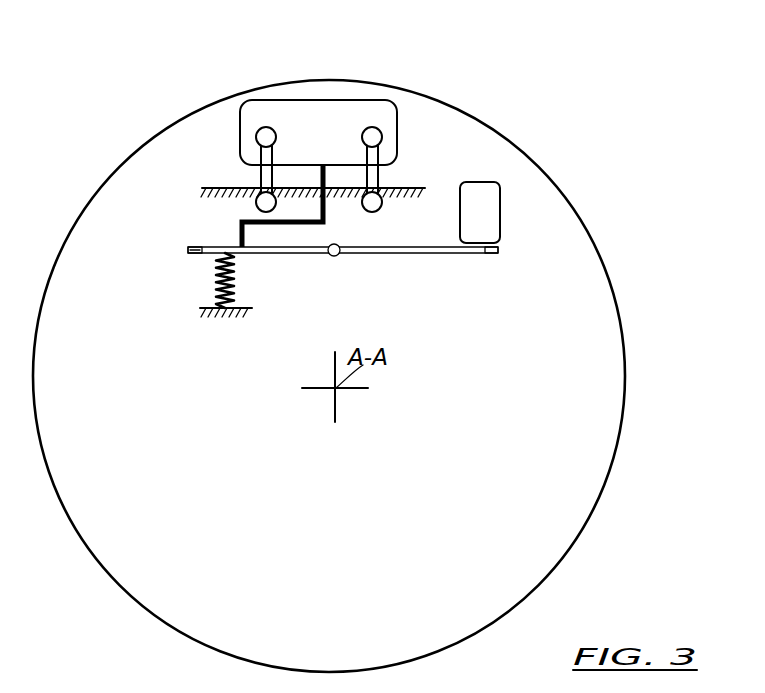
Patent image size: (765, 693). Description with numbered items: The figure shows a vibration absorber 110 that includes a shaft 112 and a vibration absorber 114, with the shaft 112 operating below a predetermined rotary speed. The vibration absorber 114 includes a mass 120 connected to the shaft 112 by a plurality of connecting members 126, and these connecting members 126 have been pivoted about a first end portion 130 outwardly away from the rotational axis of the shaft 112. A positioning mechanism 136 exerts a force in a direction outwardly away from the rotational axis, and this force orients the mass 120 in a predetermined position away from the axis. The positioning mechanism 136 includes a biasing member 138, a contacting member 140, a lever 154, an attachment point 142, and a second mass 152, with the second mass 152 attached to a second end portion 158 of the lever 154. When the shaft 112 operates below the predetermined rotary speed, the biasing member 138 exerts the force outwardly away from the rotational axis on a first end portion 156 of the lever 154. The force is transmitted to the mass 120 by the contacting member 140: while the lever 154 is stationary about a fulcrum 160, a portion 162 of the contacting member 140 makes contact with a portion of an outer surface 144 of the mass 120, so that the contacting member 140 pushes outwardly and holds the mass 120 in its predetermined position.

The vibration absorber 110 is at (597, 82).
The shaft 112 is at (605, 260).
The vibration absorber 114 is at (478, 122).
The mass 120 is at (370, 102).
The connecting members 126 is at (363, 165).
The first end portion 130 is at (357, 188).
The positioning mechanism 136 is at (582, 292).
The biasing member 138 is at (232, 291).
The contacting member 140 is at (308, 228).
The attachment point 142 is at (240, 300).
The outer surface 144 is at (383, 166).
The second mass 152 is at (493, 213).
The lever 154 is at (412, 253).
The first end portion 156 is at (190, 250).
The second end portion 158 is at (487, 253).
The fulcrum 160 is at (338, 256).
The portion of contacting member 162 is at (323, 178).